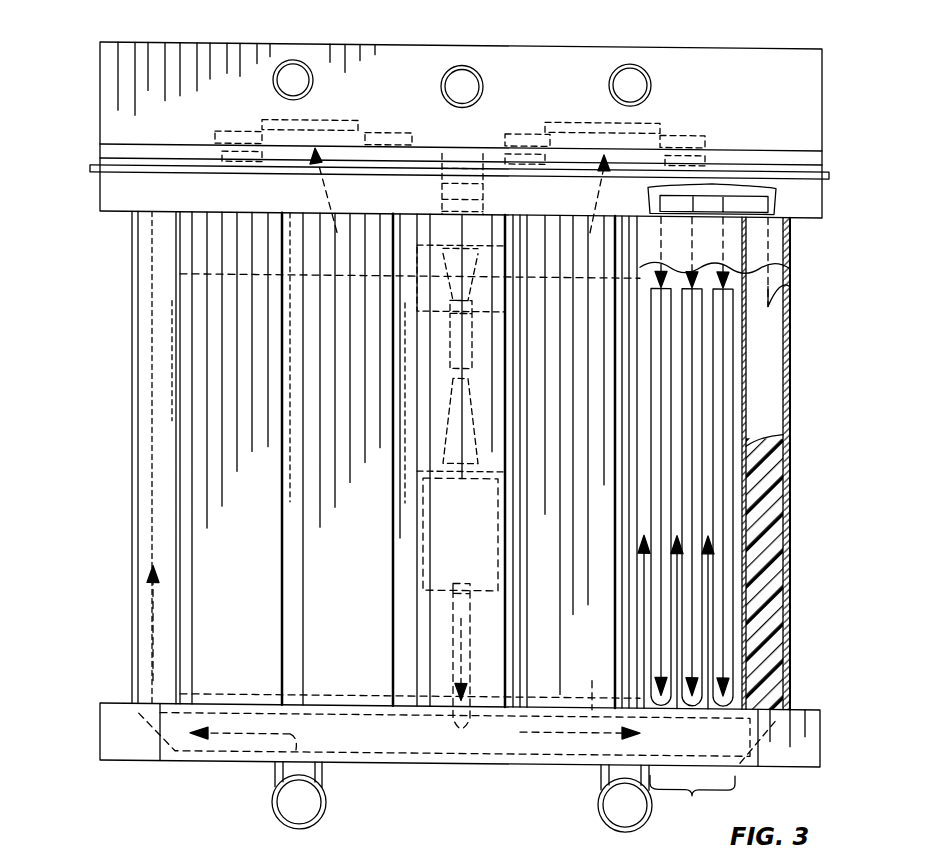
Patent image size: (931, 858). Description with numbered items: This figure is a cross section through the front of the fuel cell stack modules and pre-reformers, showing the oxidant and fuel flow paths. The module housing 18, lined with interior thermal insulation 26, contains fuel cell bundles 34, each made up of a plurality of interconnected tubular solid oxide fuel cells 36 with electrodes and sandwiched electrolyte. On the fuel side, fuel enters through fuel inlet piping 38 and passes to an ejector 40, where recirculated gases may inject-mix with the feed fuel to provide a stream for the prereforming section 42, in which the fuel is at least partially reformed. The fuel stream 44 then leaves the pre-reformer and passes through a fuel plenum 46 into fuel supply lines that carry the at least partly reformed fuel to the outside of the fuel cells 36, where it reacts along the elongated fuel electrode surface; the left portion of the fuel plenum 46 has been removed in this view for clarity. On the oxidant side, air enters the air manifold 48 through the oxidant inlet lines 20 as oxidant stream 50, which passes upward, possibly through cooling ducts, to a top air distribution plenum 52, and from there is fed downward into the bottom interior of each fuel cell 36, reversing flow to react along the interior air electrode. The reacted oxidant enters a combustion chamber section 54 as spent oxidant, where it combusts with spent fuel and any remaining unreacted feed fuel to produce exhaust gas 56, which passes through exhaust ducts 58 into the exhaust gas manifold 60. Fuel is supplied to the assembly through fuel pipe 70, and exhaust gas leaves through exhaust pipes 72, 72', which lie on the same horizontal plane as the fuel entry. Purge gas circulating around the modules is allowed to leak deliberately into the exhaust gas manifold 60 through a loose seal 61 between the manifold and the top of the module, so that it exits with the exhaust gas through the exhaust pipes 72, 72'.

The module housing 18 is at (790, 502).
The oxidant inlet lines 20 is at (300, 800).
The interior thermal insulation 26 is at (766, 556).
The fuel cell bundles 34 is at (692, 799).
The fuel cells 36 is at (668, 398).
The fuel inlet piping 38 is at (480, 185).
The ejector 40 is at (443, 332).
The prereforming section 42 is at (498, 550).
The fuel stream 44 is at (462, 652).
The fuel plenum 46 is at (545, 762).
The air manifold 48 is at (430, 760).
The oxidant stream 50 is at (790, 286).
The top air distribution plenum 52 is at (213, 183).
The combustion chamber section 54 is at (598, 238).
The exhaust gas 56 is at (330, 186).
The exhaust ducts 58 is at (330, 118).
The exhaust gas manifold 60 is at (545, 43).
The loose seal 61 is at (100, 145).
The fuel pipe 70 is at (484, 87).
The exhaust pipe 72 is at (288, 55).
The exhaust pipe 72' is at (657, 64).